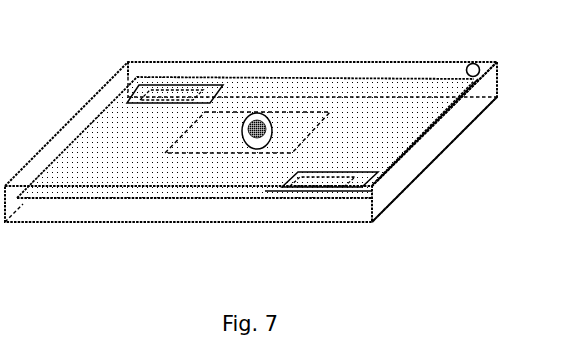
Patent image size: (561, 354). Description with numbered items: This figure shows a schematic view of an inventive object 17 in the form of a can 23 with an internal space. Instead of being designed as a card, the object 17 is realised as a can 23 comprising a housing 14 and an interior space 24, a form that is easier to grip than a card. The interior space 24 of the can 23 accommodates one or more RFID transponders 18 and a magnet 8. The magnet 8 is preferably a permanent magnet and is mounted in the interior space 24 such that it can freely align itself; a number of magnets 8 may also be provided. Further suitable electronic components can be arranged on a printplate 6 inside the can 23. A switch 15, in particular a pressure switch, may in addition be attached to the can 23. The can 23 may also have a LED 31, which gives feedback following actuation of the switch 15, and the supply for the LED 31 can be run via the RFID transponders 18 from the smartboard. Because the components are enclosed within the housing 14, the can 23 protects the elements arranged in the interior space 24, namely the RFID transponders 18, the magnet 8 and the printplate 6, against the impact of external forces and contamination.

The printplate 6 is at (193, 198).
The magnet 8 is at (257, 146).
The housing 14 is at (70, 222).
The switch 15 is at (305, 125).
The object 17 is at (434, 166).
The RFID transponder 18 is at (169, 86).
The can 23 is at (420, 200).
The interior space 24 is at (113, 151).
The LED 31 is at (469, 63).